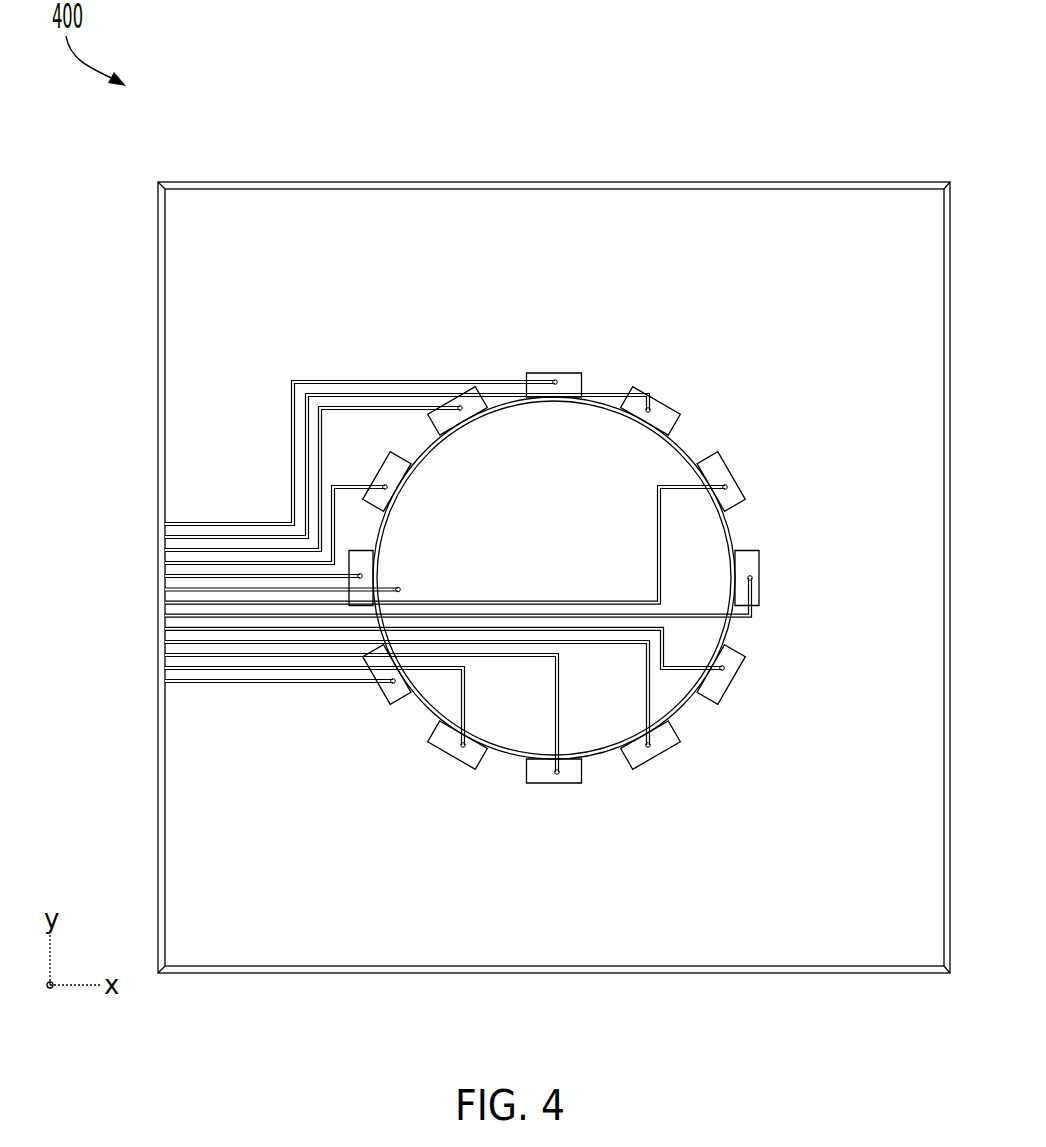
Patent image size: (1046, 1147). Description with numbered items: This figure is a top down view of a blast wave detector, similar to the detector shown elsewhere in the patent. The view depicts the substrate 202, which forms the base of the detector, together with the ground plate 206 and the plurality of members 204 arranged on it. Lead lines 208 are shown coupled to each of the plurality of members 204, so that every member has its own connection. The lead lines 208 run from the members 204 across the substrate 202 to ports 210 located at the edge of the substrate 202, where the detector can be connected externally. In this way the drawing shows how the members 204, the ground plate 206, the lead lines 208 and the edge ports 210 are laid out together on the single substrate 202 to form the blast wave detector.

The substrate 202 is at (176, 385).
The plurality of members 204 is at (502, 396).
The ground plate 206 is at (662, 402).
The lead lines 208 is at (341, 382).
The ports 210 is at (150, 618).